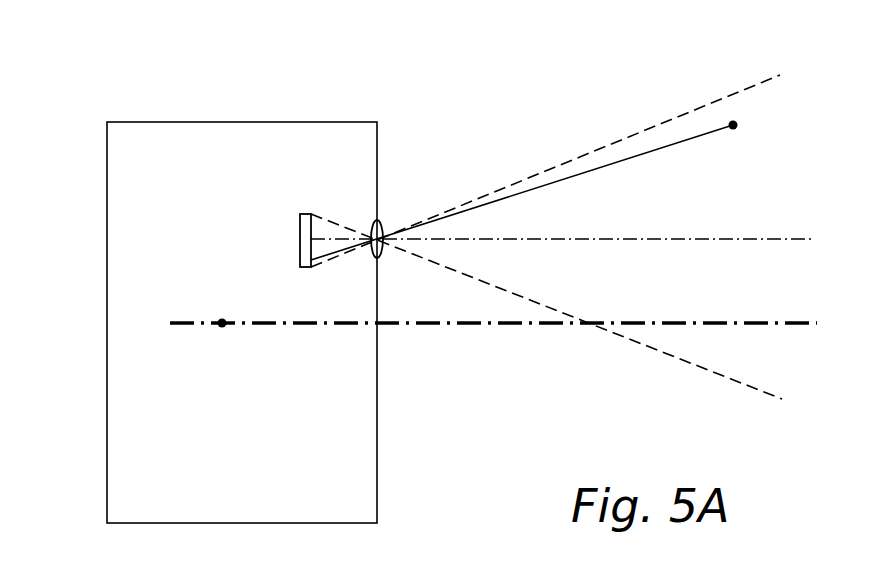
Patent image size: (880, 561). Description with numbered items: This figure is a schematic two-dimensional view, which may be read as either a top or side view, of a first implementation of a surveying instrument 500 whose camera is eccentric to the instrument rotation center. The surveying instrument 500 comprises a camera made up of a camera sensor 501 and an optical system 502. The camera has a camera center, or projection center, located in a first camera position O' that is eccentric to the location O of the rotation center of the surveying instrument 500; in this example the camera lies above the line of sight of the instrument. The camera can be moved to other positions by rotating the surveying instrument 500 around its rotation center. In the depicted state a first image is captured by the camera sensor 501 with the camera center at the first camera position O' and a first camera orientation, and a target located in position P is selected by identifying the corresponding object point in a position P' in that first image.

The surveying instrument 500 is at (162, 122).
The camera sensor 501 is at (311, 214).
The optical system 502 is at (385, 250).
The target position P is at (715, 180).
The object point position P' is at (256, 206).
The rotation center location O is at (264, 382).
The first camera position O' is at (436, 181).